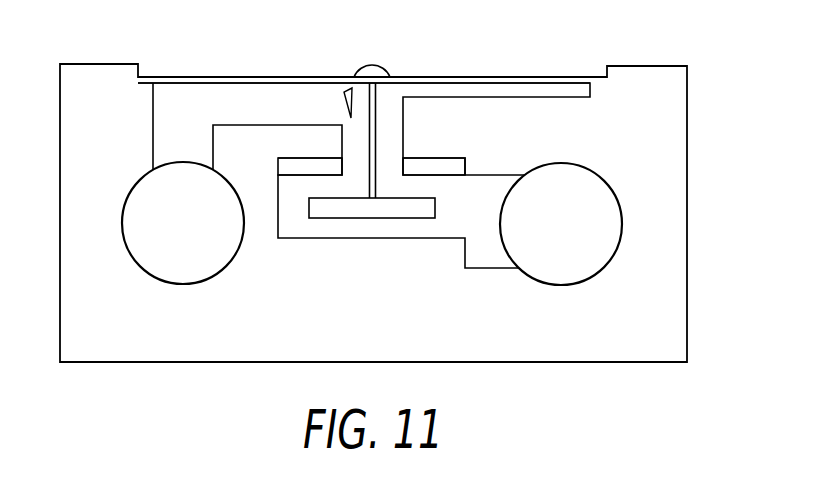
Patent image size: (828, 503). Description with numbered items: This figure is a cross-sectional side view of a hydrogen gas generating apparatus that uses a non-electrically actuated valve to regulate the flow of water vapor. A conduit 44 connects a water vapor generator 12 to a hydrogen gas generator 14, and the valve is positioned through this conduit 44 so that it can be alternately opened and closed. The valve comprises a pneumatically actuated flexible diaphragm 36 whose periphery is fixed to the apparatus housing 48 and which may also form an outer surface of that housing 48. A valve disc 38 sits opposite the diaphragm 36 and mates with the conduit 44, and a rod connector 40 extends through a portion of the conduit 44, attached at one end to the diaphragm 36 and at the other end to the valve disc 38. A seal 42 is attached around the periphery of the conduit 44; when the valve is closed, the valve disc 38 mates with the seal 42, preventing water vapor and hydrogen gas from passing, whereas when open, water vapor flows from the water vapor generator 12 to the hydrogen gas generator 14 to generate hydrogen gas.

The water vapor generator 12 is at (145, 248).
The hydrogen gas generator 14 is at (598, 250).
The flexible diaphragm 36 is at (210, 76).
The valve disc 38 is at (395, 210).
The rod connector 40 is at (375, 137).
The seal 42 is at (310, 157).
The conduit 44 is at (350, 116).
The housing 48 is at (667, 208).